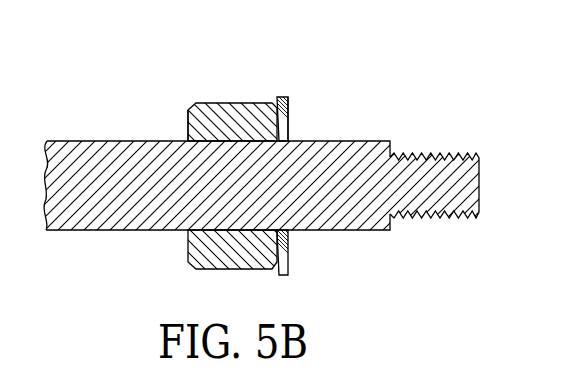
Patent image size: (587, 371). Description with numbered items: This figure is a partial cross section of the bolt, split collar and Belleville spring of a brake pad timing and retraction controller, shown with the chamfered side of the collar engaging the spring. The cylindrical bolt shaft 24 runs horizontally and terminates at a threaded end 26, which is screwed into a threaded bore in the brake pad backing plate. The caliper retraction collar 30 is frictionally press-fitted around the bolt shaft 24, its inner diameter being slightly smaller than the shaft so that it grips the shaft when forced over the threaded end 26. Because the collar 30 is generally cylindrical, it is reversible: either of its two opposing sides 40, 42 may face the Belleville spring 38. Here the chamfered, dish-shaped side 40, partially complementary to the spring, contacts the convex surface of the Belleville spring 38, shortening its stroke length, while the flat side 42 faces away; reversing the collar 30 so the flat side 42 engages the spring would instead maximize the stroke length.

The bolt shaft 24 is at (86, 141).
The threaded end 26 is at (437, 153).
The caliper retraction collar 30 is at (229, 96).
The Belleville spring 38 is at (283, 97).
The chamfered side 40 is at (288, 125).
The flat side 42 is at (187, 118).